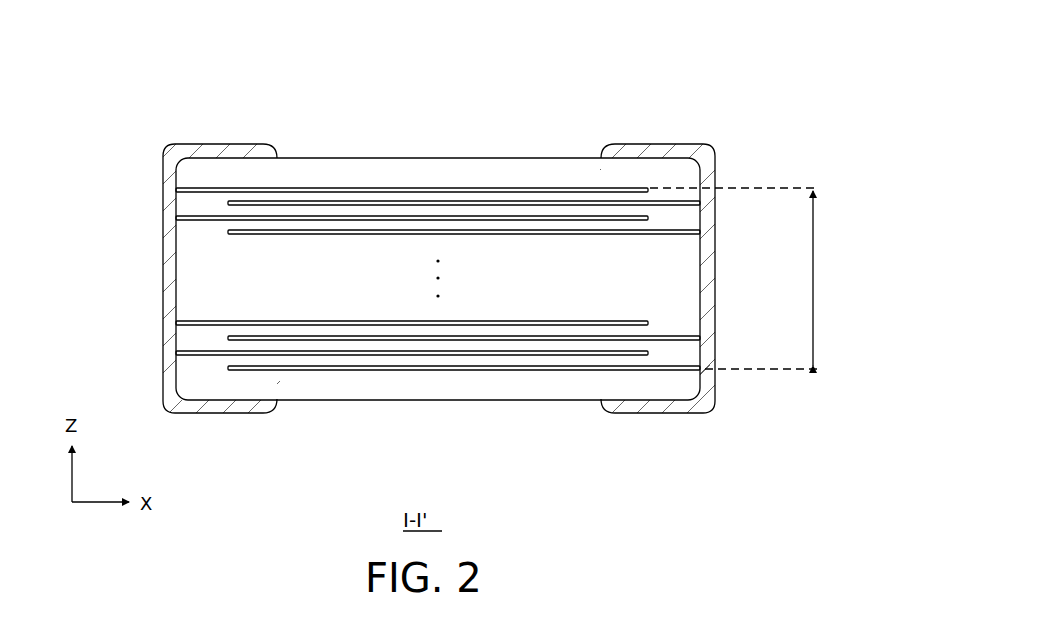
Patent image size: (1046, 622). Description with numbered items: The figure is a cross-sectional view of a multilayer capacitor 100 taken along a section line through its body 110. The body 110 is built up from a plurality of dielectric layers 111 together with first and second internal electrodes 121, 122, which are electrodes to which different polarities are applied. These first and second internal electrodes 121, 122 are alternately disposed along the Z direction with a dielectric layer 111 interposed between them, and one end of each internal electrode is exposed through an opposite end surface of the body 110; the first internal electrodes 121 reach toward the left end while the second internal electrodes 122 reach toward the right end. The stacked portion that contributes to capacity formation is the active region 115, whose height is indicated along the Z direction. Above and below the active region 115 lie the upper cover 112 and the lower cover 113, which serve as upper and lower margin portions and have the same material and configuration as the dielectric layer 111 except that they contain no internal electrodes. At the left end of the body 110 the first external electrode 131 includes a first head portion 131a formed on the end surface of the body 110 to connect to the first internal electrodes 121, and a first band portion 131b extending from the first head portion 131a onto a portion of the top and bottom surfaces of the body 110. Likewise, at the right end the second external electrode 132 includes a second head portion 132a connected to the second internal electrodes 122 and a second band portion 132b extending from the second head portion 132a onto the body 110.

The multilayer capacitor 100 is at (424, 45).
The body 110 is at (390, 157).
The dielectric layer 111 is at (677, 218).
The upper cover 112 is at (503, 172).
The lower cover 113 is at (503, 386).
The active region 115 is at (756, 278).
The first internal electrode 121 is at (200, 221).
The second internal electrode 122 is at (677, 232).
The first external electrode 131 is at (199, 232).
The first head portion 131a is at (162, 182).
The first band portion 131b is at (235, 148).
The second external electrode 132 is at (679, 231).
The second head portion 132a is at (716, 182).
The second band portion 132b is at (667, 253).